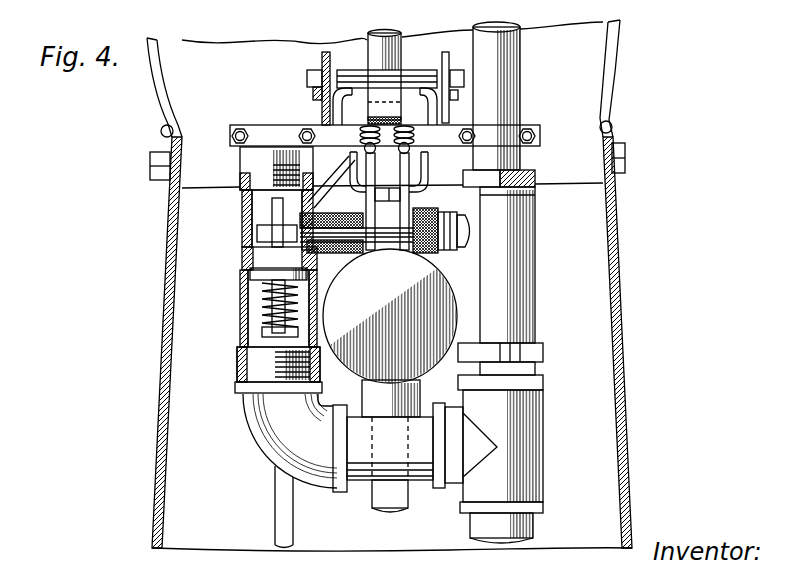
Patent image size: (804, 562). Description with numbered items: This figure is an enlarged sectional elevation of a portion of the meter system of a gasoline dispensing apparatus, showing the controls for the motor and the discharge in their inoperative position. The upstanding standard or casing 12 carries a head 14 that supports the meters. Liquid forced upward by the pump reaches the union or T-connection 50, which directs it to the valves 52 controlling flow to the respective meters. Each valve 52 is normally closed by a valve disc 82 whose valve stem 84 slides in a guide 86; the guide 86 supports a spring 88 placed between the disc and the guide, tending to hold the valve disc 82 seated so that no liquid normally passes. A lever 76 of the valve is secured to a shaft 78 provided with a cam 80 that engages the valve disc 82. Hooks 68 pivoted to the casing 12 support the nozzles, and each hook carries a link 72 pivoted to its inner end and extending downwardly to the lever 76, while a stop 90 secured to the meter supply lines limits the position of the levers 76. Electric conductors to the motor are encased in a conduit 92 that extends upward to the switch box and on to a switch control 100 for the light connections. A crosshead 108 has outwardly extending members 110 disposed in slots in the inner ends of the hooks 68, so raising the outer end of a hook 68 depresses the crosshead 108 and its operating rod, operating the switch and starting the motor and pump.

The standard or casing 12 is at (620, 347).
The head 14 is at (645, 102).
The union or T-connection 50 is at (523, 462).
The valve 52 is at (240, 257).
The hook 68 is at (322, 105).
The link 72 is at (322, 117).
The lever 76 is at (365, 203).
The shaft 78 is at (325, 235).
The cam 80 is at (278, 215).
The valve disc 82 is at (252, 273).
The valve stem 84 is at (275, 308).
The guide 86 is at (275, 327).
The spring 88 is at (263, 300).
The stop 90 is at (510, 127).
The conduit 92 is at (403, 507).
The switch control 100 is at (443, 312).
The crosshead 108 is at (383, 82).
The outwardly extending member 110 is at (417, 70).